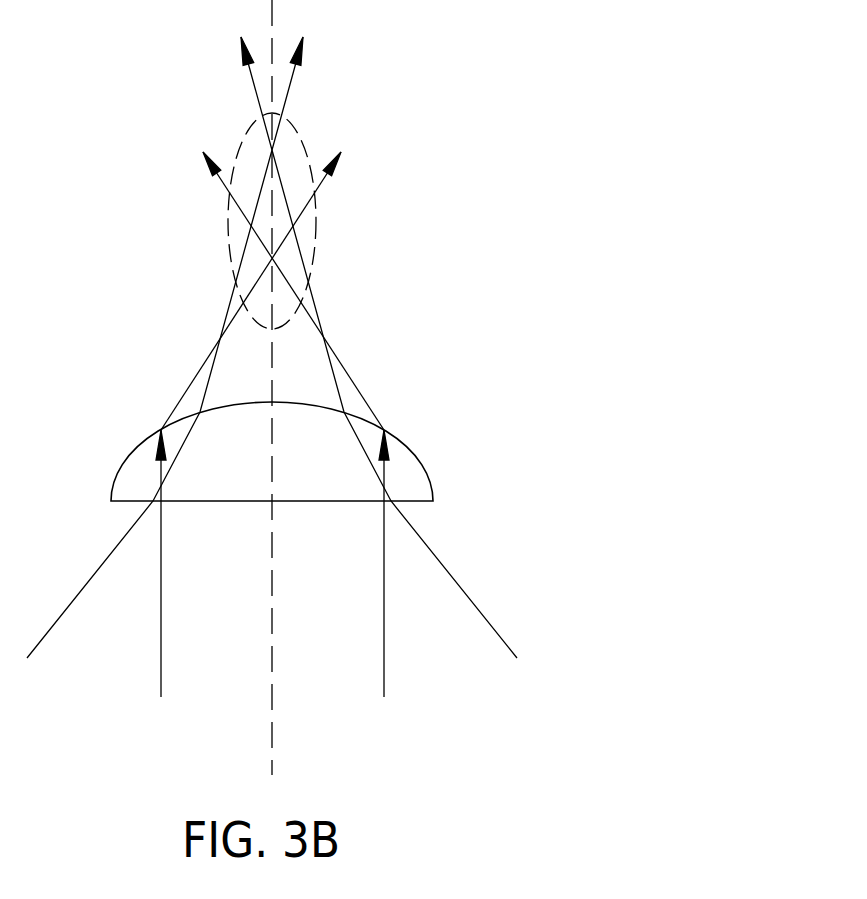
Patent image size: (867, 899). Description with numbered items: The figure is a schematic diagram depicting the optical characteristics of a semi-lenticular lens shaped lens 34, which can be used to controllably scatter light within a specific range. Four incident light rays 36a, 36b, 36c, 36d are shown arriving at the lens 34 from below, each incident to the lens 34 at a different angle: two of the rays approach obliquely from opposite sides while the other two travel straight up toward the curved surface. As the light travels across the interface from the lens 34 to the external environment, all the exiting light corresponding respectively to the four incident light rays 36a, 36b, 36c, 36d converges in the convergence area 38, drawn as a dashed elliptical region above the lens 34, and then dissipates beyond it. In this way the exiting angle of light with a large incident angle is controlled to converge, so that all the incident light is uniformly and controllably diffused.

The lens 34 is at (427, 470).
The convergence area 38 is at (315, 220).
The incident light 36a is at (450, 572).
The incident light 36b is at (385, 618).
The incident light 36c is at (162, 618).
The incident light 36d is at (60, 617).